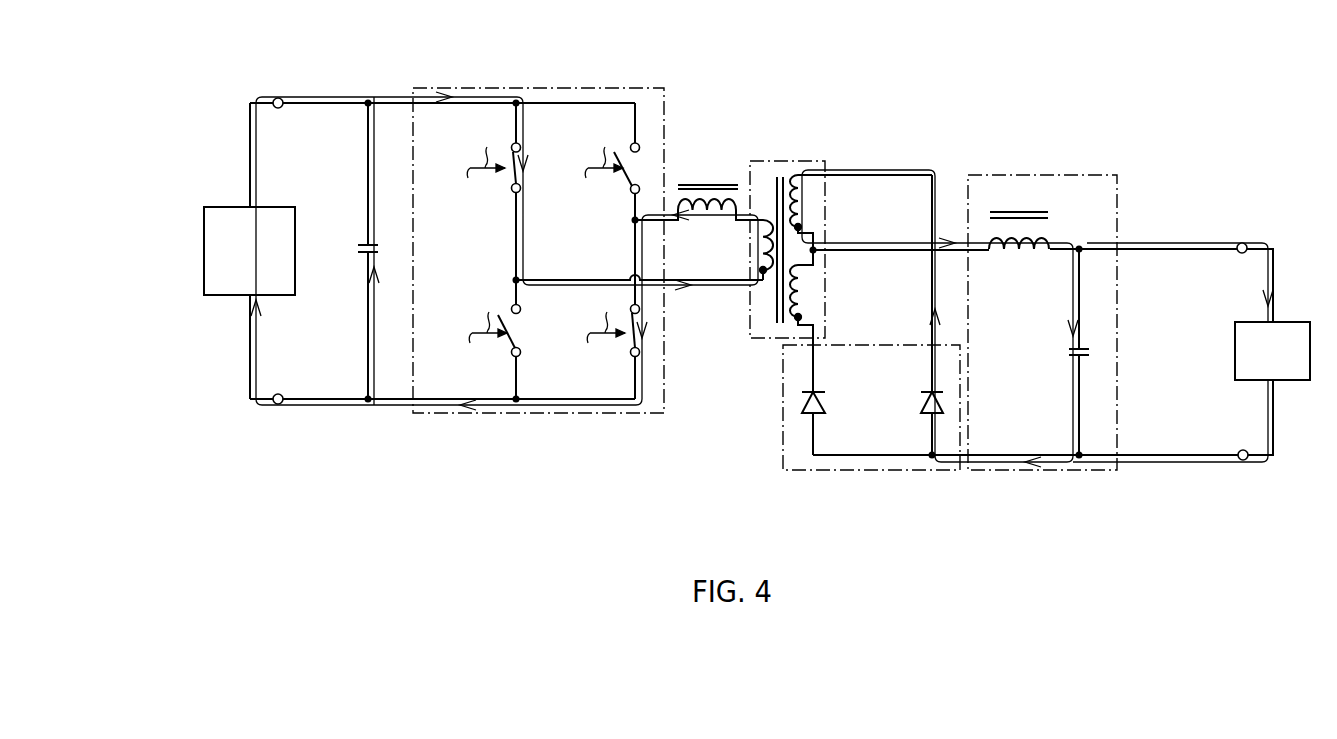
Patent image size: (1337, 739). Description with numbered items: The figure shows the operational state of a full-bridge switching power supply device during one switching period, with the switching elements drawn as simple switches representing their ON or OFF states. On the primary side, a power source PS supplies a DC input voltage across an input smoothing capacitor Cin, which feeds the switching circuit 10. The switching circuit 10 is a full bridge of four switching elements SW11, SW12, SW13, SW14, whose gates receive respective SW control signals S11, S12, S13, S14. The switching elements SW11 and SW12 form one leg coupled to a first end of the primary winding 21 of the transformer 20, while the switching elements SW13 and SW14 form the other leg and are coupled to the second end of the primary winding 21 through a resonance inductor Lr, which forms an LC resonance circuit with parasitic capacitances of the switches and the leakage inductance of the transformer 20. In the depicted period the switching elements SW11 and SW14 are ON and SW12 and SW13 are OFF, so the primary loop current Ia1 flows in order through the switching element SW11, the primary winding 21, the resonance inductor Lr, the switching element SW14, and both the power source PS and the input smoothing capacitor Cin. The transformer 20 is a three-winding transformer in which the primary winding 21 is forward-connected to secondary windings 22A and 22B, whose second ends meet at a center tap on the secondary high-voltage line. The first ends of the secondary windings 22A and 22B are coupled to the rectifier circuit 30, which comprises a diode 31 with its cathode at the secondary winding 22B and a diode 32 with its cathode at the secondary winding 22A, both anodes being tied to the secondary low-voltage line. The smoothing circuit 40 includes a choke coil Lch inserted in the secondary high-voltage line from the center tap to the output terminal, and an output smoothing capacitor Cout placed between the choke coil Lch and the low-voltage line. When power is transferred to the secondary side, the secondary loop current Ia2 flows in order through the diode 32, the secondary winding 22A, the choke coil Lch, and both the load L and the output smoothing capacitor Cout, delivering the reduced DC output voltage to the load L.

The power source PS is at (238, 205).
The input smoothing capacitor Cin is at (360, 242).
The switching circuit 10 is at (545, 88).
The SW control signal S11 is at (485, 146).
The SW control signal S12 is at (483, 351).
The SW control signal S13 is at (603, 146).
The SW control signal S14 is at (601, 351).
The switching element SW11 is at (502, 182).
The switching element SW12 is at (497, 314).
The switching element SW13 is at (617, 182).
The switching element SW14 is at (614, 320).
The resonance inductor Lr is at (705, 180).
The transformer 20 is at (786, 241).
The primary winding 21 is at (749, 252).
The secondary winding 22A is at (810, 207).
The secondary winding 22B is at (815, 296).
The rectifier circuit 30 is at (871, 446).
The diode 31 is at (818, 390).
The diode 32 is at (927, 415).
The smoothing circuit 40 is at (1042, 286).
The choke coil Lch is at (1020, 253).
The output smoothing capacitor Cout is at (1073, 358).
The load L is at (1283, 320).
The primary loop current Ia1 is at (470, 95).
The secondary loop current Ia2 is at (868, 168).